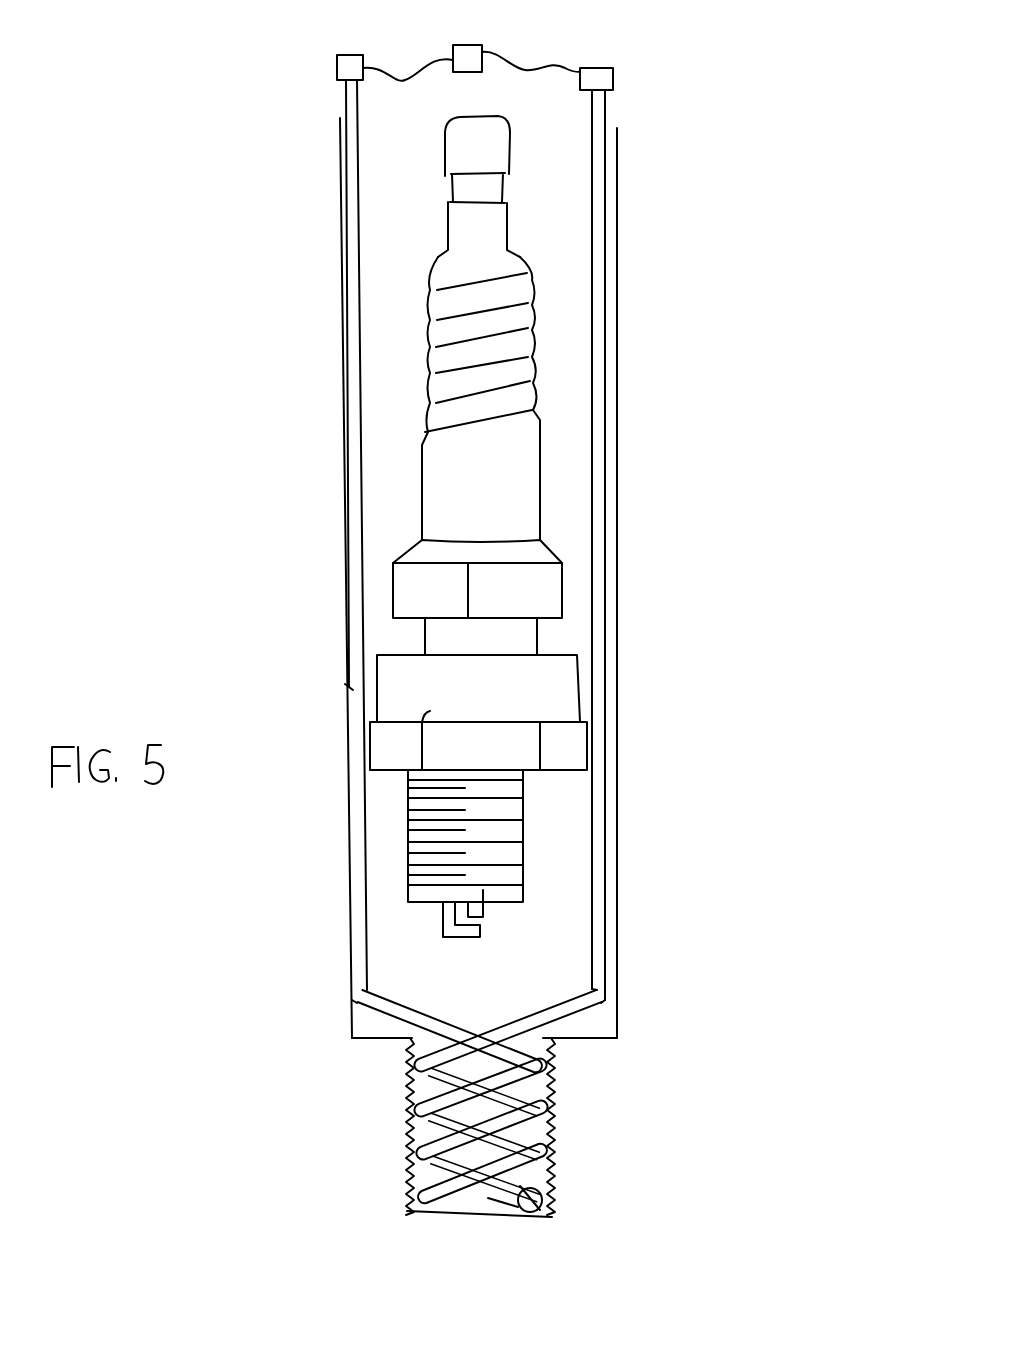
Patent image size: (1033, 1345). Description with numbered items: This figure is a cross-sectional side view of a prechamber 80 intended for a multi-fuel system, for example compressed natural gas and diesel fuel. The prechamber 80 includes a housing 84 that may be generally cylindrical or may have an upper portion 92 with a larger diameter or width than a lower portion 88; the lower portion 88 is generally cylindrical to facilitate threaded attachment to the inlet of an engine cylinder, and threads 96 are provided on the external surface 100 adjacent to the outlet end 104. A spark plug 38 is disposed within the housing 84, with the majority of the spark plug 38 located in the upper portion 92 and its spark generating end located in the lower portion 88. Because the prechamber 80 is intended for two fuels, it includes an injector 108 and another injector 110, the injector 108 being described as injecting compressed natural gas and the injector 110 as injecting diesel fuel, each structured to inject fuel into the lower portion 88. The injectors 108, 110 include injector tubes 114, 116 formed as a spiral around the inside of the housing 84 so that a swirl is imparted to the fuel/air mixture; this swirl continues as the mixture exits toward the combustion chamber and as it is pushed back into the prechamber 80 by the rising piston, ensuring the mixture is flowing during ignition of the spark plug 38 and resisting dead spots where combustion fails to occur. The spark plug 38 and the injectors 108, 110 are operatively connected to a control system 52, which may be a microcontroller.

The prechamber 80 is at (406, 529).
The spark plug 38 is at (478, 526).
The control system 52 is at (478, 50).
The housing 84 is at (385, 578).
The lower portion 88 is at (407, 1130).
The upper portion 92 is at (382, 535).
The threads 96 is at (534, 1127).
The external surface 100 is at (444, 1060).
The outlet end 104 is at (399, 1209).
The injector 108 is at (653, 534).
The injector 110 is at (289, 372).
The injector tube 114 is at (509, 1007).
The injector tube 116 is at (447, 999).